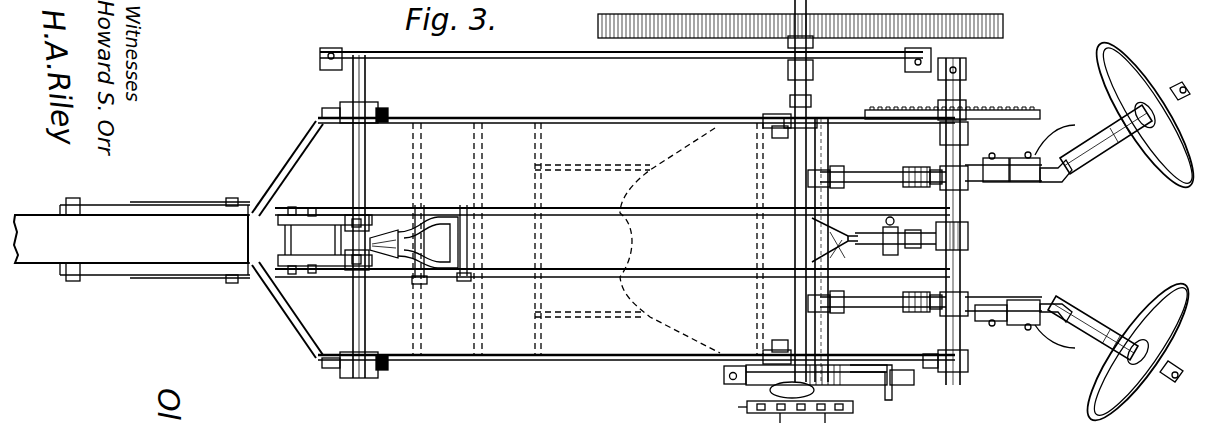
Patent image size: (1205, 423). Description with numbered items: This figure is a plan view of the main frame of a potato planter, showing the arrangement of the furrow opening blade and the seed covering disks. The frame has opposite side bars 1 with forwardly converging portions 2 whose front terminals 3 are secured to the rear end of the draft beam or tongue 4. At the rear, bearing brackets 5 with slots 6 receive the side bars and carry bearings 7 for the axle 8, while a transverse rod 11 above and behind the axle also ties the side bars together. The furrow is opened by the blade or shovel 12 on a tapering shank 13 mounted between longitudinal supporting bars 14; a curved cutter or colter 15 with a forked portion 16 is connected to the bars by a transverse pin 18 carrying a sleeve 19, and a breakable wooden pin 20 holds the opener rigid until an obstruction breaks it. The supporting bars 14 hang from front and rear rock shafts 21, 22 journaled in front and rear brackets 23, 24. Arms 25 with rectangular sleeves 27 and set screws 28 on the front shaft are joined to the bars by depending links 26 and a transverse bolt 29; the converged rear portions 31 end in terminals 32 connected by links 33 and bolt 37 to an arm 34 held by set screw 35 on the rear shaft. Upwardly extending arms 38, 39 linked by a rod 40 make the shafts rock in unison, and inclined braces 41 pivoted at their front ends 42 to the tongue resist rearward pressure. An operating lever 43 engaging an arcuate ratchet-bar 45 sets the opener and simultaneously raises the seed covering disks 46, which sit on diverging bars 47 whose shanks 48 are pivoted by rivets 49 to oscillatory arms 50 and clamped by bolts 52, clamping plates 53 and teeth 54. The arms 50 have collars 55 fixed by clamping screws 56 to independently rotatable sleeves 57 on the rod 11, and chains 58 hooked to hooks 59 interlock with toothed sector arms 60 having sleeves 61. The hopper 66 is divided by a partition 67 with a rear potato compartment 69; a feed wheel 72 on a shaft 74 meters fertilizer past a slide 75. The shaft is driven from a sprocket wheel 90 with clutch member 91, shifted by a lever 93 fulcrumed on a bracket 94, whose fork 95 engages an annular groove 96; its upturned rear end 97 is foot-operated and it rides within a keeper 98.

The side bars 1 is at (608, 121).
The forwardly converging portions 2 is at (290, 150).
The front terminals 3 is at (192, 206).
The draft beam or tongue 4 is at (131, 240).
The bearing brackets 5 is at (775, 130).
The slots or bifurcations 6 is at (768, 116).
The bearings 7 is at (792, 104).
The axle 8 is at (796, 281).
The transverse rod 11 is at (824, 118).
The furrow opening blade or shovel 12 is at (390, 258).
The shank 13 is at (430, 271).
The longitudinal supporting bars 14 is at (669, 217).
The curved cutter or colter 15 is at (378, 232).
The forked or bifurcated portion 16 is at (438, 215).
The transverse pin or bolt 18 is at (420, 205).
The sleeve 19 is at (420, 286).
The breakable pin 20 is at (470, 281).
The front transverse rock shaft 21 is at (356, 166).
The rear transverse rock shaft 22 is at (963, 206).
The front brackets 23 is at (384, 112).
The rear brackets 24 is at (961, 108).
The arms 25 is at (325, 240).
The depending links 26 is at (311, 207).
The rectangular sleeves 27 is at (348, 214).
The set screws 28 is at (372, 214).
The transverse bolt 29 is at (300, 206).
The rear portions 31 is at (845, 262).
The terminals 32 is at (862, 230).
The links 33 is at (890, 226).
The arm 34 is at (909, 249).
The set screw 35 is at (968, 240).
The bolt 37 is at (880, 250).
The upwardly extending arm 38 is at (349, 101).
The upwardly extending arm 39 is at (925, 62).
The rod or bar 40 is at (682, 59).
The inclined front braces 41 is at (236, 202).
The front ends 42 is at (72, 281).
The operating lever 43 is at (969, 129).
The arcuate ratchet-bar 45 is at (1012, 108).
The seed covering disks 46 is at (1165, 178).
The inclined rearwardly diverging bars or members 47 is at (1100, 140).
The front attachment portions or shanks 48 is at (1064, 178).
The rivets 49 is at (1000, 186).
The oscillatory arms 50 is at (872, 171).
The bolts 52 is at (1028, 158).
The clamping plates 53 is at (1000, 335).
The corrugations or teeth 54 is at (996, 158).
The collars or eyes 55 is at (845, 182).
The clamping screws 56 is at (808, 178).
The sleeves 57 is at (816, 201).
The chains 58 is at (924, 164).
The hooks 59 is at (903, 176).
The toothed sector-shaped arms 60 is at (935, 185).
The rectangular sleeves 61 is at (963, 168).
The hopper 66 is at (422, 345).
The transverse partition 67 is at (540, 299).
The rear potato compartment 69 is at (649, 239).
The feed wheel 72 is at (540, 241).
The transverse shaft 74 is at (490, 334).
The slide 75 is at (800, 19).
The driving sprocket wheel 90 is at (747, 407).
The clutch face or member 91 is at (820, 414).
The shifting lever 93 is at (850, 385).
The bracket or support 94 is at (724, 373).
The depending fork 95 is at (838, 372).
The annular groove 96 is at (775, 392).
The upturned rear end 97 is at (915, 380).
The keeper 98 is at (892, 398).